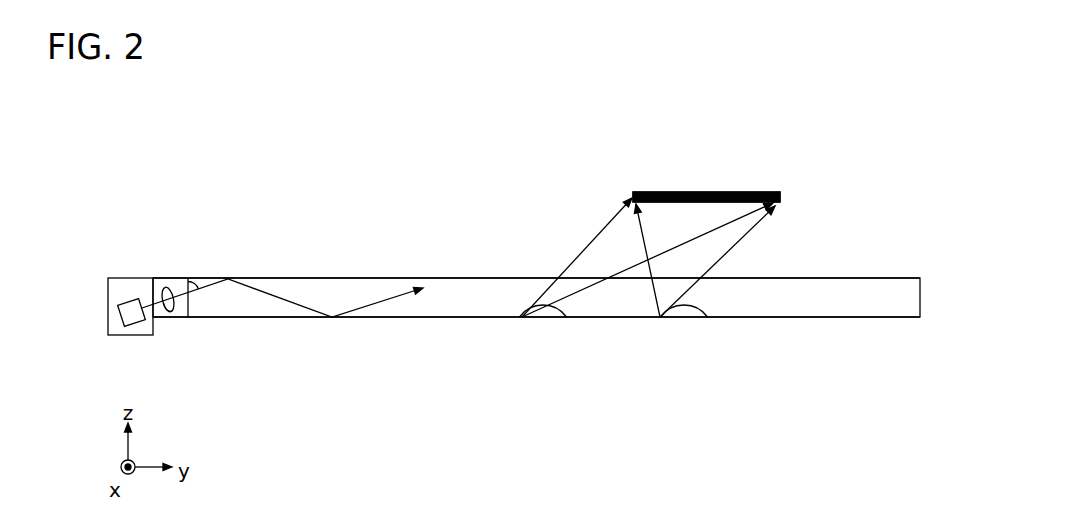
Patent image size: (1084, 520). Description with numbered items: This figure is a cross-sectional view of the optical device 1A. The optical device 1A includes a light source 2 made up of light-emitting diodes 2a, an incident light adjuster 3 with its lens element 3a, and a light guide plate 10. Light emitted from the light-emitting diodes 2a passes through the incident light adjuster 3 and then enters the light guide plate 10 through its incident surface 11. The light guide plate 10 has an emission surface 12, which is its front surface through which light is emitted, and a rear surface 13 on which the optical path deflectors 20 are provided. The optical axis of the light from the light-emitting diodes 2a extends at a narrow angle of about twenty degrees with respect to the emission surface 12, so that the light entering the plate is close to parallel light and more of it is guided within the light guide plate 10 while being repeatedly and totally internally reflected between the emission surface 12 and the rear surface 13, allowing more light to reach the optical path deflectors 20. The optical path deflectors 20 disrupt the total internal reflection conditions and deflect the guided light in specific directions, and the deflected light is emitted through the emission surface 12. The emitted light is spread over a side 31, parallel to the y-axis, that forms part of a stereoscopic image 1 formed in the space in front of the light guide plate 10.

The optical device 1A is at (324, 185).
The stereoscopic image 1 is at (753, 194).
The light source 2 is at (132, 277).
The light-emitting diodes 2a is at (137, 321).
The incident light adjuster 3 is at (167, 277).
The lens surface 3a is at (168, 313).
The light guide plate 10 is at (853, 279).
The incident surface 11 is at (186, 290).
The emission surface 12 is at (812, 278).
The rear surface 13 is at (810, 320).
The optical path deflectors 20 is at (546, 320).
The side 31 is at (707, 192).